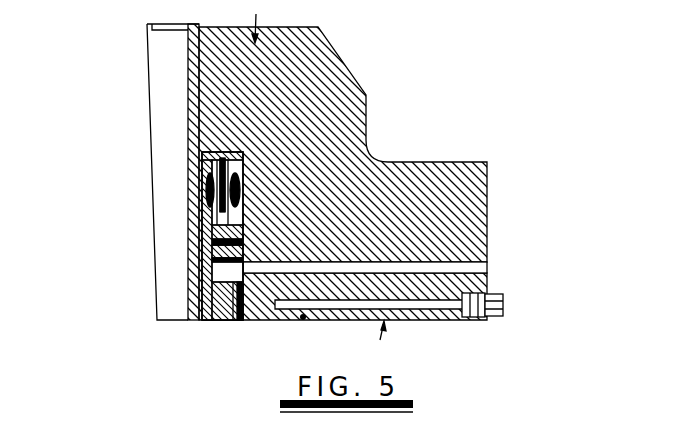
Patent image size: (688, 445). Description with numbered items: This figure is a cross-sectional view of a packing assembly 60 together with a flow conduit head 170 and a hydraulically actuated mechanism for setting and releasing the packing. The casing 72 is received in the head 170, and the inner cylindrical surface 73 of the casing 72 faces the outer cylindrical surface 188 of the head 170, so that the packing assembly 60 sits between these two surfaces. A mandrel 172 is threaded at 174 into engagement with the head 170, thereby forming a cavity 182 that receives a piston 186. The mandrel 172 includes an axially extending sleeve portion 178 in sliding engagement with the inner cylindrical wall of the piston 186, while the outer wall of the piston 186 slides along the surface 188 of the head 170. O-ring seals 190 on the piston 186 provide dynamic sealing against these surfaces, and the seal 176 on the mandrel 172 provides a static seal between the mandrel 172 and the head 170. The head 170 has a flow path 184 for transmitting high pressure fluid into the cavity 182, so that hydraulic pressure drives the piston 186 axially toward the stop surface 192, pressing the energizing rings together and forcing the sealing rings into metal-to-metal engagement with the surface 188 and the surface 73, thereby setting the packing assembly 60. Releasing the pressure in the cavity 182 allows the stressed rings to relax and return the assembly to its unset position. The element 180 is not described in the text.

The packing assembly 60 is at (207, 190).
The casing 72 is at (190, 323).
The inner cylindrical surface 73 is at (197, 117).
The head 170 is at (463, 187).
The mandrel 172 is at (230, 322).
The threads 174 is at (238, 322).
The seal 176 is at (233, 322).
The sleeve portion 178 is at (215, 270).
The sleeve 180 is at (205, 288).
The cavity 182 is at (215, 263).
The flow path 184 is at (452, 268).
The piston 186 is at (212, 224).
The outer cylindrical surface 188 is at (215, 250).
The O-ring seals 190 is at (215, 236).
The stop surface 192 is at (204, 158).